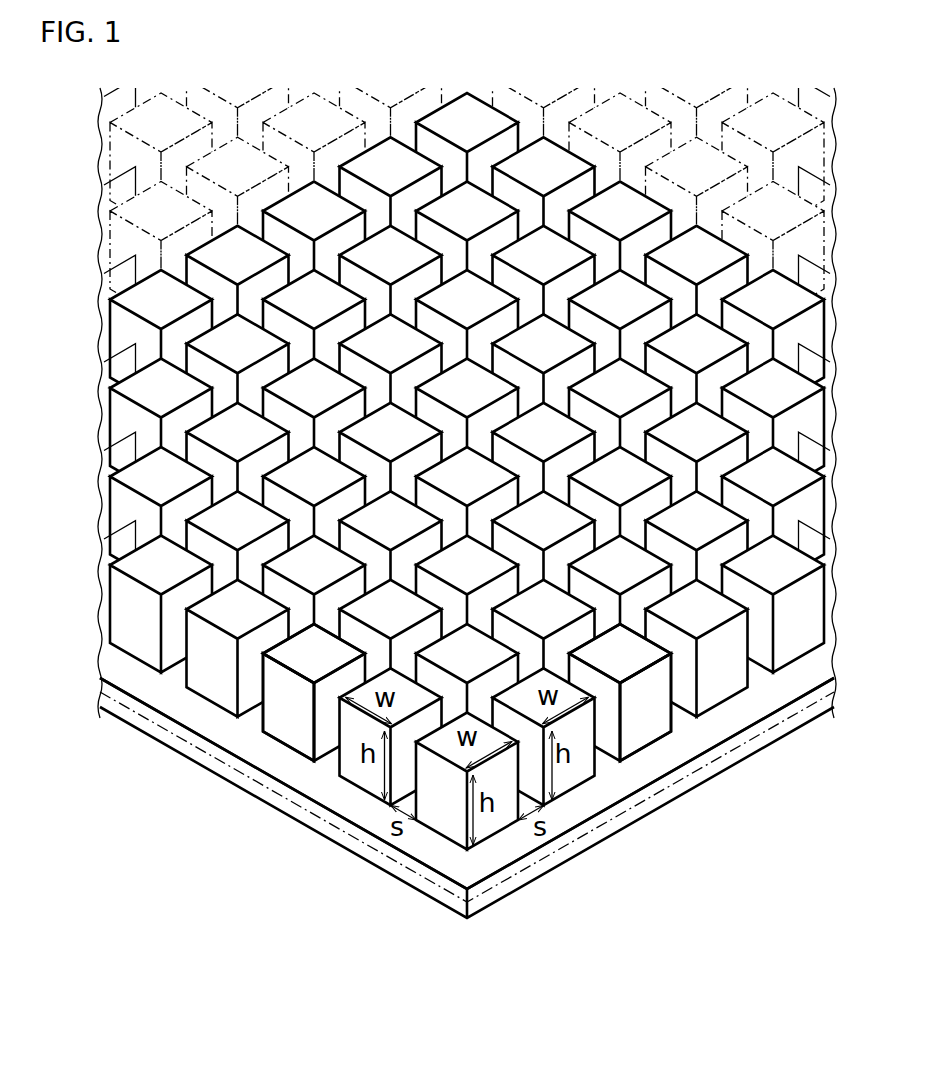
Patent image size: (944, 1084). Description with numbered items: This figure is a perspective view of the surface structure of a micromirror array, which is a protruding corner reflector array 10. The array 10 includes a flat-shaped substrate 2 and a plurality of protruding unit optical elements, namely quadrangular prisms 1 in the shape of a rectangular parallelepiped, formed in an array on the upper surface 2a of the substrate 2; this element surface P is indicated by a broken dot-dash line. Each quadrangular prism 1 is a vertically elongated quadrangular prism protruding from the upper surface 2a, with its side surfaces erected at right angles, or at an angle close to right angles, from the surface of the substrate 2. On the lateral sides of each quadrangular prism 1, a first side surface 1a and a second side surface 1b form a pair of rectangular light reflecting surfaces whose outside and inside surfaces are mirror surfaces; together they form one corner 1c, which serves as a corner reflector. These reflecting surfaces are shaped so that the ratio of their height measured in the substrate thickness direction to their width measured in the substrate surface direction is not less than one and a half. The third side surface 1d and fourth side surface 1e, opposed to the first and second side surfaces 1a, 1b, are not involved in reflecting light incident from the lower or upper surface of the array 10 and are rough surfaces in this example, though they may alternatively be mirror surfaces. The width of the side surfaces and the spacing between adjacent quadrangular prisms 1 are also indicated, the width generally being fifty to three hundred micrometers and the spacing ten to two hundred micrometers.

The quadrangular prism 1 is at (208, 665).
The first side surface 1a is at (280, 700).
The second side surface 1b is at (323, 717).
The corner 1c is at (313, 714).
The third side surface 1d is at (653, 672).
The fourth side surface 1e is at (277, 673).
The substrate 2 is at (467, 516).
The upper surface 2a is at (163, 690).
The protruding corner reflector array 10 is at (468, 509).
The element surface P is at (393, 862).